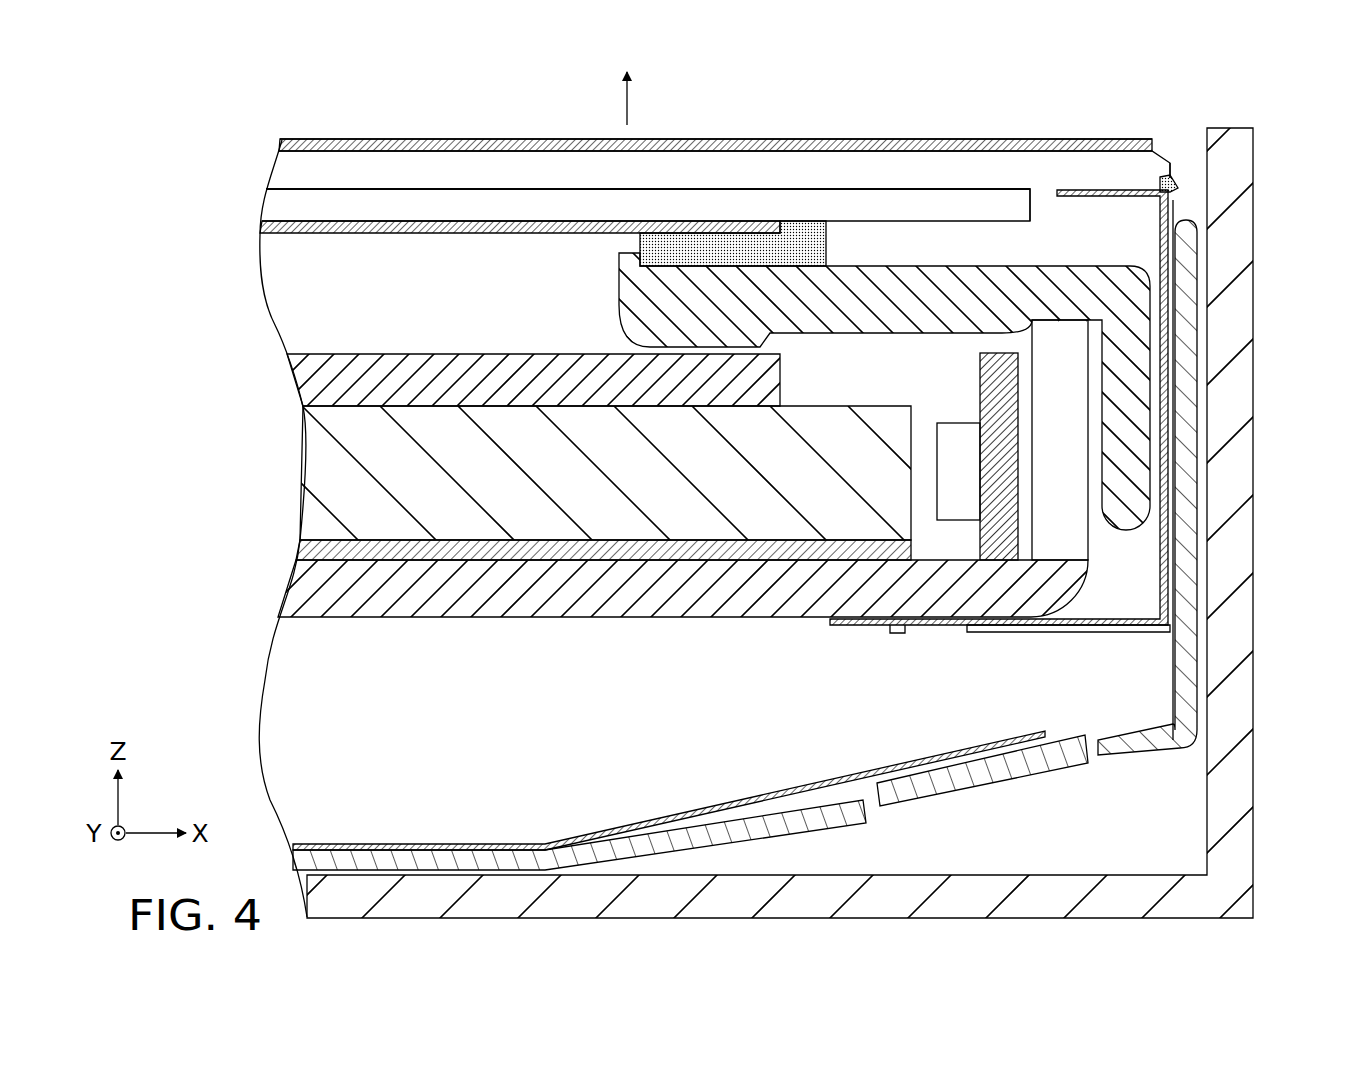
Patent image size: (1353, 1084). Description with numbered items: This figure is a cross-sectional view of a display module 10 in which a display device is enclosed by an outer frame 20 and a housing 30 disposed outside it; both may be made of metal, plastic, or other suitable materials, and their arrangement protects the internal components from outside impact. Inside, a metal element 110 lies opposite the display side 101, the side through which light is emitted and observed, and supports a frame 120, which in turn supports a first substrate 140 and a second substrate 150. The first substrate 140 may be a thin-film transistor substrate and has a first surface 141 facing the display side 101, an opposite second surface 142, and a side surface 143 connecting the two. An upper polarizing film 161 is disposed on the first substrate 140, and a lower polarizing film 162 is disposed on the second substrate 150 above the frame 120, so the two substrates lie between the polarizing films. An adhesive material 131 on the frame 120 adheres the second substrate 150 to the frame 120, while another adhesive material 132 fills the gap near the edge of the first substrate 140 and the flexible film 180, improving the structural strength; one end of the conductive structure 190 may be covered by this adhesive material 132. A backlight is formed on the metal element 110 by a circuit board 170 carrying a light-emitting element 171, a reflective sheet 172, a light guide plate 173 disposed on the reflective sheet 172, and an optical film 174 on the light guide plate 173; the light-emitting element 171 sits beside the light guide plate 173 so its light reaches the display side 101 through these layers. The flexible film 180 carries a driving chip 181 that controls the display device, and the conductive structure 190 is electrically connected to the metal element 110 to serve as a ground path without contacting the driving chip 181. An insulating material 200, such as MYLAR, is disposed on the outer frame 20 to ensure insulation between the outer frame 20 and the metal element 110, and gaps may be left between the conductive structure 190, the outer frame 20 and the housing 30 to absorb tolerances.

The display module 10 is at (88, 125).
The outer frame 20 is at (1192, 550).
The housing 30 is at (1240, 630).
The display side 101 is at (654, 98).
The metal element 110 is at (490, 600).
The frame 120 is at (1140, 457).
The adhesive material 131 is at (800, 244).
The adhesive material 132 is at (1177, 175).
The first substrate 140 is at (282, 170).
The first surface 141 is at (403, 139).
The second surface 142 is at (396, 189).
The side surface 143 is at (1173, 176).
The second substrate 150 is at (282, 204).
The upper polarizing film 161 is at (282, 143).
The lower polarizing film 162 is at (272, 228).
The circuit board 170 is at (1010, 495).
The light-emitting element 171 is at (953, 437).
The reflective sheet 172 is at (308, 549).
The light guide plate 173 is at (325, 465).
The optical film 174 is at (312, 380).
The flexible film 180 is at (1170, 370).
The driving chip 181 is at (898, 636).
The conductive structure 190 is at (1176, 406).
The insulating material 200 is at (470, 844).